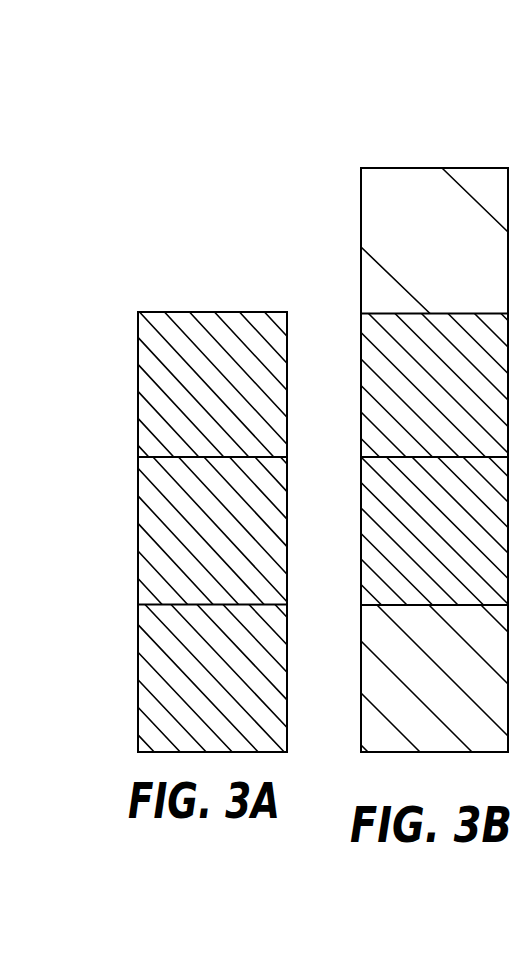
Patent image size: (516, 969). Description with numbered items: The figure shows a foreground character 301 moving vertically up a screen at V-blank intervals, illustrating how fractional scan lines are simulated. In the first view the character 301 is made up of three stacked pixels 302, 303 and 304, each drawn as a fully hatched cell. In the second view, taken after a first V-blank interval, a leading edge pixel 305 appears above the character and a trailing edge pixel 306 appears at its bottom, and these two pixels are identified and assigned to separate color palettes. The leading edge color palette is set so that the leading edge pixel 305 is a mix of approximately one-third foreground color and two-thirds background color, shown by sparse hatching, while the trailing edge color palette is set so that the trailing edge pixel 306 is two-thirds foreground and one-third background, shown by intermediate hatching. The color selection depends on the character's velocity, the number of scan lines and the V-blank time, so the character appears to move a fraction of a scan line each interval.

In FIG. 3A, the foreground character 301 is at (210, 294).
In FIG. 3B, the foreground character 301 is at (438, 155).
In FIG. 3A, the pixel 302 is at (138, 383).
In FIG. 3A, the pixel 303 is at (138, 537).
In FIG. 3A, the pixel 304 is at (138, 667).
In FIG. 3B, the leading edge pixel 305 is at (361, 217).
In FIG. 3B, the trailing edge pixel 306 is at (361, 733).